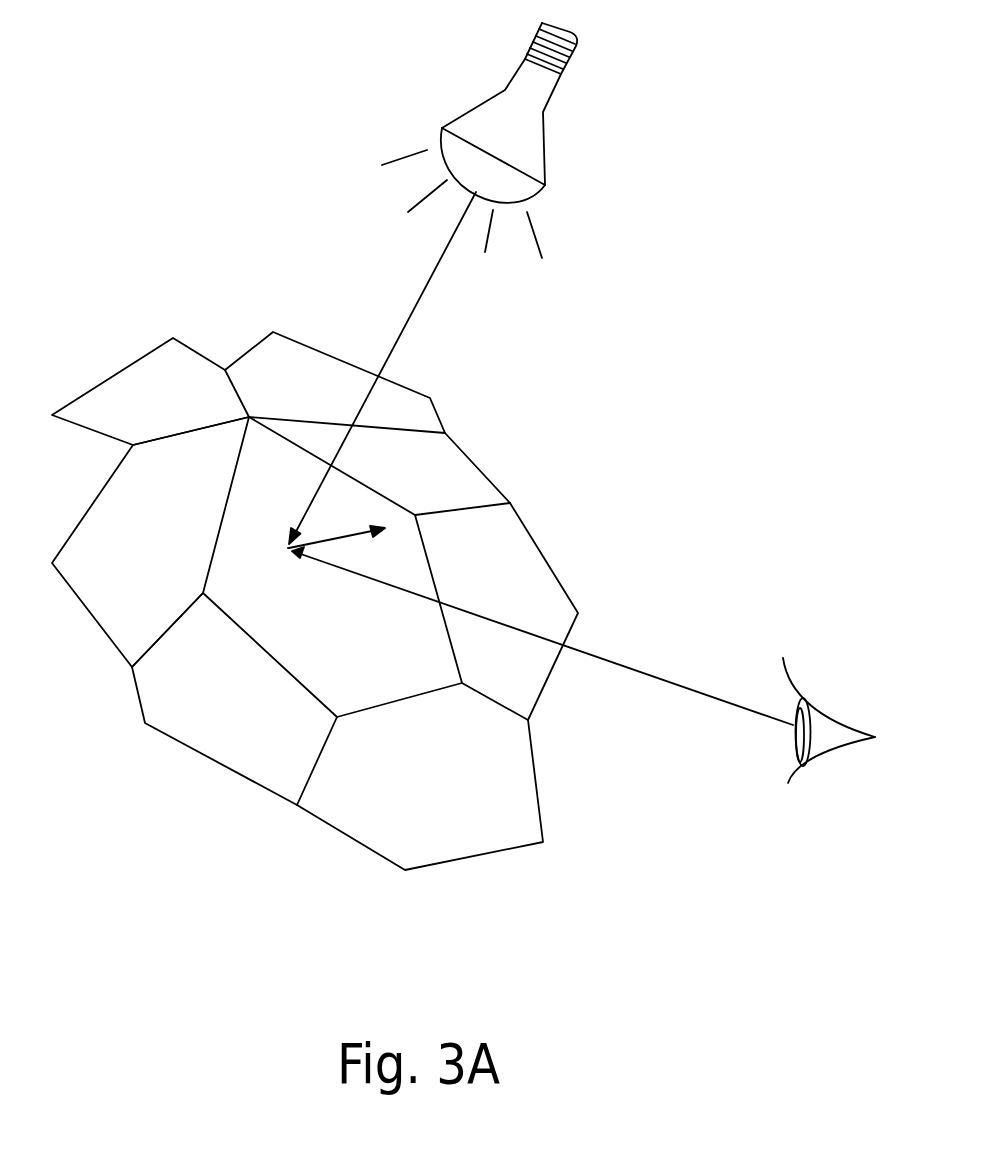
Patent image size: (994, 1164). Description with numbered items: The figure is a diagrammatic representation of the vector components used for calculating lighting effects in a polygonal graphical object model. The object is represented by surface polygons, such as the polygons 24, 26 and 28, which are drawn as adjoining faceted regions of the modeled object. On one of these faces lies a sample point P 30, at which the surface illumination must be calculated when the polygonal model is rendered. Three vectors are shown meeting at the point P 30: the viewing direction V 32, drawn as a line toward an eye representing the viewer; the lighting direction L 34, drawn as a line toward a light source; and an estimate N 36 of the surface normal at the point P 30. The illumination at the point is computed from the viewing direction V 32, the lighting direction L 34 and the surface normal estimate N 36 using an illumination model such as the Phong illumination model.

The surface polygon 24 is at (168, 412).
The surface polygon 26 is at (157, 550).
The surface polygon 28 is at (227, 707).
The point P 30 is at (284, 550).
The viewing direction V 32 is at (612, 663).
The lighting direction L 34 is at (394, 345).
The surface normal estimate N 36 is at (346, 538).